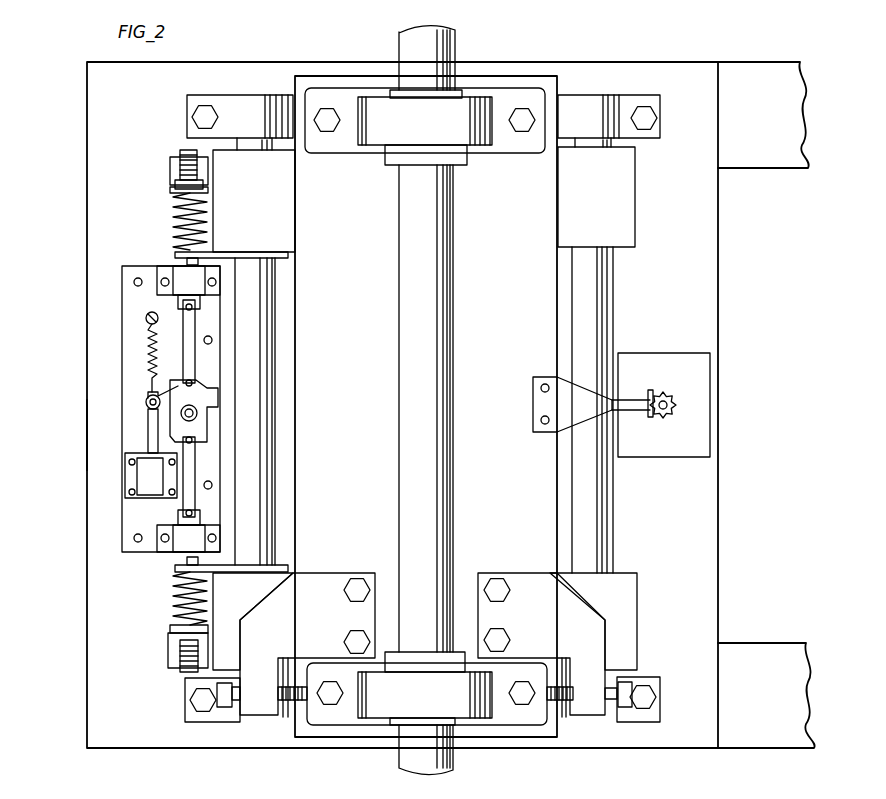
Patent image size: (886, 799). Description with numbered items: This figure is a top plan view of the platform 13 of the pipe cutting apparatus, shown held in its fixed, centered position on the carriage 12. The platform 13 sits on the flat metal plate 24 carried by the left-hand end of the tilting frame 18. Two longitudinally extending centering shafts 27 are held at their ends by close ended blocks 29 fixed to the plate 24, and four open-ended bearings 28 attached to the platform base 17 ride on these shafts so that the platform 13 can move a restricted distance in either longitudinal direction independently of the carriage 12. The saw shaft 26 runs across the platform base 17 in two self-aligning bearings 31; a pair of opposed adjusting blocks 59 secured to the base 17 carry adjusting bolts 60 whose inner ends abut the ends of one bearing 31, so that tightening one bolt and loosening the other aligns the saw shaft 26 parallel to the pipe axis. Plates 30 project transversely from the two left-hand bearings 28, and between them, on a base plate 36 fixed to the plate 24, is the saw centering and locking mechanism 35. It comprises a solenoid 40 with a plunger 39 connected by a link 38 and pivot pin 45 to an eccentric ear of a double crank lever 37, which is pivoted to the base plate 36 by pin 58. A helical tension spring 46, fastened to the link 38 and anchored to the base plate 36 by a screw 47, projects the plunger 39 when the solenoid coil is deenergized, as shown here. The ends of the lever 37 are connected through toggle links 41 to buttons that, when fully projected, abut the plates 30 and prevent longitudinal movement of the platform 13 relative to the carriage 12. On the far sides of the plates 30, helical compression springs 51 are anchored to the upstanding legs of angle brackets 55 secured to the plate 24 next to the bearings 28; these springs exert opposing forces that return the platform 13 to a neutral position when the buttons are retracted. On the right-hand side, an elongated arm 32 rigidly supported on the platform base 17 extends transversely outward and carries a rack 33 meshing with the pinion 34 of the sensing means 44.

The carriage 12 is at (84, 428).
The platform 13 is at (318, 72).
The platform base 17 is at (360, 401).
The frame 18 is at (766, 405).
The flat metal plate 24 is at (140, 716).
The saw shaft 26 is at (432, 401).
The centering shafts 27 is at (265, 333).
The open-ended bearings 28 is at (262, 207).
The close ended blocks 29 is at (243, 108).
The plates 30 is at (226, 252).
The self-aligning bearings 31 is at (427, 127).
The elongated arm 32 is at (579, 414).
The rack 33 is at (655, 393).
The pinion 34 is at (664, 418).
The saw centering and locking mechanism 35 is at (148, 265).
The base plate 36 is at (152, 306).
The double crank lever 37 is at (175, 390).
The link 38 is at (148, 399).
The plunger 39 is at (148, 428).
The solenoid 40 is at (148, 478).
The toggle links 41 is at (186, 328).
The sensing means 44 is at (660, 350).
The pivot pin 45 is at (146, 404).
The helical tension spring 46 is at (149, 348).
The screw 47 is at (146, 318).
The helical compression springs 51 is at (173, 225).
The angle bracket 55 is at (178, 168).
The pin 58 is at (198, 413).
The adjusting blocks 59 is at (322, 628).
The adjusting bolts 60 is at (290, 702).